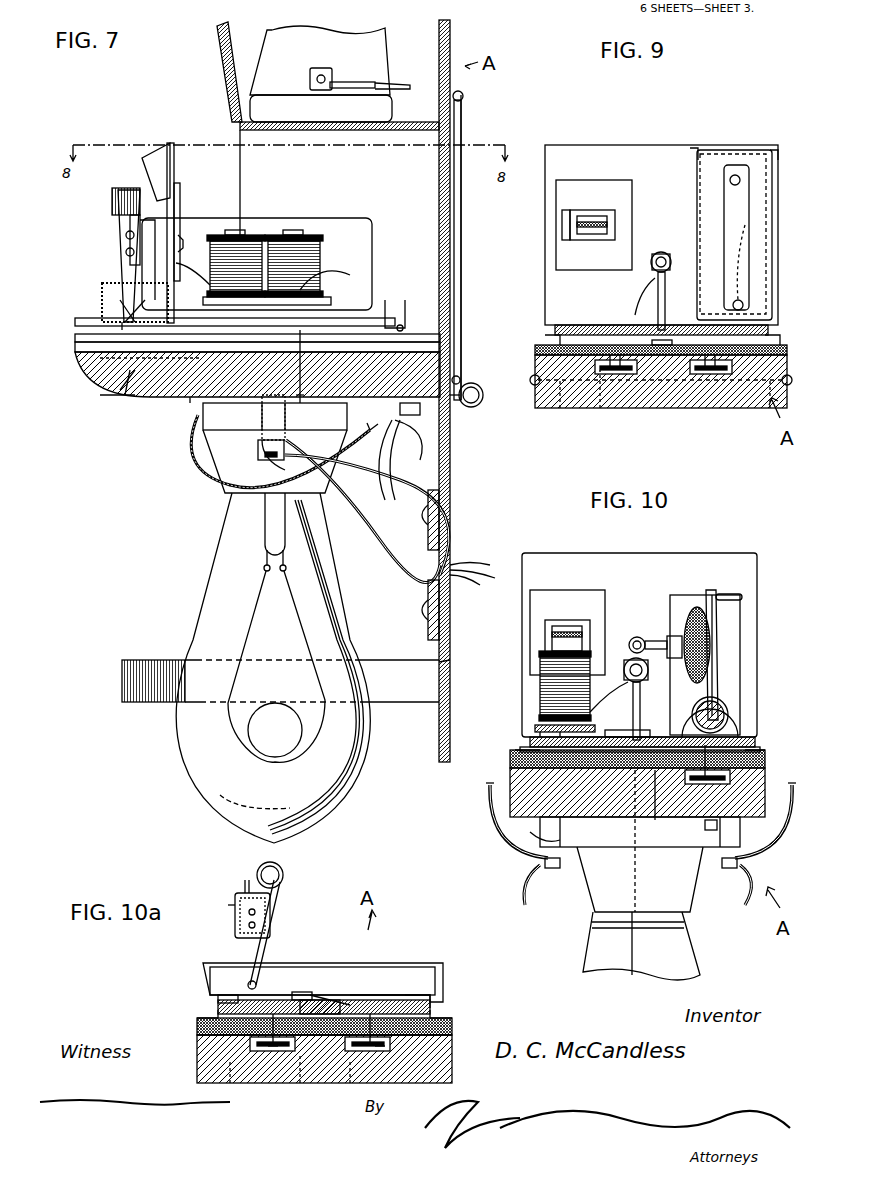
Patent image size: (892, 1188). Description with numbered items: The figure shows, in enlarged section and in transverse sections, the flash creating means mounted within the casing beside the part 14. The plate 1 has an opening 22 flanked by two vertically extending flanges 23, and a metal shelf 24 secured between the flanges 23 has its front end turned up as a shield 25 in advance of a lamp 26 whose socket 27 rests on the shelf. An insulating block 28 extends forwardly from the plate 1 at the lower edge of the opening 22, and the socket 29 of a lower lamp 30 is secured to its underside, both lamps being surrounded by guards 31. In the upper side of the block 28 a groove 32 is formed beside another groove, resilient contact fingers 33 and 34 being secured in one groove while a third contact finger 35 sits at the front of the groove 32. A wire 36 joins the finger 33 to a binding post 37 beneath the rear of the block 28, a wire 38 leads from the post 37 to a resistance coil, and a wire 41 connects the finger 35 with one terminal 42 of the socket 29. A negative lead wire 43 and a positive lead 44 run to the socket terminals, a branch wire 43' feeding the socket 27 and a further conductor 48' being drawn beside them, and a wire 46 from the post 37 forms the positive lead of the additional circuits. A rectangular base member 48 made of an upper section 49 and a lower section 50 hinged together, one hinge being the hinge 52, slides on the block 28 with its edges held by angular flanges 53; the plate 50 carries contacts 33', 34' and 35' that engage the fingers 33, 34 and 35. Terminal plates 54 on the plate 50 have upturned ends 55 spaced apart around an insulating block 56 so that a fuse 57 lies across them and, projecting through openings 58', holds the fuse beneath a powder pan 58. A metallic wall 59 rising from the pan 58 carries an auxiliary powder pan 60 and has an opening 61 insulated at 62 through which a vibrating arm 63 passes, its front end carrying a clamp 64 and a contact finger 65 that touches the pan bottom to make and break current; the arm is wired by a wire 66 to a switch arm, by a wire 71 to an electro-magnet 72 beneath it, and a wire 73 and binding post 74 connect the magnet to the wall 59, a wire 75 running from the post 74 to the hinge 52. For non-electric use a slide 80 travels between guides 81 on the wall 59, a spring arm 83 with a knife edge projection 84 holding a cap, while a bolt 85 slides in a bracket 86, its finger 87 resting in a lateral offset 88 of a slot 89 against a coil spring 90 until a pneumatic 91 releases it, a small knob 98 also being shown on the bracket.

In FIG. 7, the plate 1 is at (450, 645).
In FIG. 7, the casing wall 14 is at (452, 225).
In FIG. 7, the opening 22 is at (461, 186).
In FIG. 7, the vertically extending flanges 23 is at (462, 145).
In FIG. 7, the metal shelf 24 is at (382, 132).
In FIG. 7, the shield 25 is at (228, 60).
In FIG. 7, the lamp 26 is at (380, 40).
In FIG. 9, the lamp 26 is at (575, 395).
In FIG. 7, the socket 27 is at (385, 70).
In FIG. 7, the insulating block 28 is at (198, 430).
In FIG. 10, the insulating block 28 is at (525, 835).
In FIG. 10a, the insulating block 28 is at (245, 1062).
In FIG. 7, the socket 29 is at (232, 480).
In FIG. 10, the socket 29 is at (595, 895).
In FIG. 7, the lower lamp 30 is at (215, 616).
In FIG. 10, the lower lamp 30 is at (690, 960).
In FIG. 7, the guards 31 is at (145, 660).
In FIG. 9, the guards 31 is at (600, 375).
In FIG. 10, the guards 31 is at (700, 785).
In FIG. 10a, the guards 31 is at (310, 1055).
In FIG. 7, the groove 32 is at (100, 390).
In FIG. 9, the groove 32 is at (710, 375).
In FIG. 10a, the groove 32 is at (385, 1048).
In FIG. 9, the contact finger 33 is at (616, 397).
In FIG. 10a, the contact finger 33 is at (265, 1071).
In FIG. 10a, the contact 33' is at (279, 1079).
In FIG. 10, the contact finger 34 is at (657, 824).
In FIG. 7, the contact 34' is at (309, 375).
In FIG. 10, the contact 34' is at (742, 764).
In FIG. 7, the contact finger 35 is at (93, 403).
In FIG. 9, the contact finger 35 is at (750, 407).
In FIG. 10a, the contact finger 35 is at (345, 1096).
In FIG. 7, the contact 35' is at (113, 392).
In FIG. 10a, the contact 35' is at (387, 1074).
In FIG. 7, the wire 36 is at (195, 405).
In FIG. 7, the binding post 37 is at (440, 430).
In FIG. 7, the wire 38 is at (400, 470).
In FIG. 7, the wire 41 is at (262, 414).
In FIG. 7, the terminal 42 is at (251, 457).
In FIG. 10, the terminal 42 is at (560, 870).
In FIG. 7, the negative lead wire 43 is at (390, 520).
In FIG. 10, the negative lead wire 43 is at (513, 835).
In FIG. 7, the branch wire 43' is at (237, 483).
In FIG. 7, the positive lead 44 is at (375, 518).
In FIG. 10, the positive lead 44 is at (765, 848).
In FIG. 7, the wire 46 is at (450, 500).
In FIG. 10, the wire 46 is at (750, 748).
In FIG. 7, the base member 48 is at (242, 343).
In FIG. 9, the base member 48 is at (646, 317).
In FIG. 10a, the base member 48 is at (345, 1035).
In FIG. 10, the conductor 48' is at (762, 881).
In FIG. 7, the upper section 49 is at (80, 318).
In FIG. 9, the upper section 49 is at (575, 325).
In FIG. 10, the upper section 49 is at (745, 737).
In FIG. 10a, the upper section 49 is at (218, 1005).
In FIG. 7, the lower section 50 is at (78, 362).
In FIG. 9, the lower section 50 is at (535, 352).
In FIG. 10, the lower section 50 is at (510, 760).
In FIG. 10a, the lower section 50 is at (197, 1040).
In FIG. 7, the hinge 52 is at (395, 328).
In FIG. 9, the angular flanges 53 is at (548, 340).
In FIG. 10, the angular flanges 53 is at (515, 752).
In FIG. 10a, the angular flanges 53 is at (197, 1020).
In FIG. 7, the terminal plates 54 is at (120, 315).
In FIG. 9, the terminal plates 54 is at (775, 318).
In FIG. 10, the terminal plates 54 is at (540, 738).
In FIG. 10a, the terminal plates 54 is at (235, 1000).
In FIG. 7, the upturned ends 55 is at (128, 322).
In FIG. 10a, the upturned ends 55 is at (320, 995).
In FIG. 9, the insulating block 56 is at (670, 345).
In FIG. 10, the insulating block 56 is at (640, 800).
In FIG. 10a, the insulating block 56 is at (320, 1000).
In FIG. 10a, the fuse 57 is at (300, 990).
In FIG. 7, the pan 58 is at (125, 288).
In FIG. 10a, the pan 58 is at (335, 968).
In FIG. 10a, the openings 58' is at (385, 965).
In FIG. 7, the metallic wall 59 is at (175, 172).
In FIG. 9, the metallic wall 59 is at (652, 145).
In FIG. 10, the metallic wall 59 is at (612, 565).
In FIG. 7, the auxiliary powder pan 60 is at (160, 157).
In FIG. 9, the opening 61 is at (615, 222).
In FIG. 7, the insulation 62 is at (182, 205).
In FIG. 9, the insulation 62 is at (610, 190).
In FIG. 10, the insulation 62 is at (580, 610).
In FIG. 7, the vibrating arm 63 is at (275, 218).
In FIG. 9, the vibrating arm 63 is at (592, 215).
In FIG. 10, the vibrating arm 63 is at (565, 625).
In FIG. 10a, the vibrating arm 63 is at (245, 882).
In FIG. 7, the clamp 64 is at (122, 213).
In FIG. 10a, the clamp 64 is at (233, 895).
In FIG. 7, the contact finger 65 is at (122, 238).
In FIG. 10a, the contact finger 65 is at (280, 905).
In FIG. 10, the wire 66 is at (690, 659).
In FIG. 7, the wire 71 is at (350, 285).
In FIG. 7, the electro-magnet 72 is at (322, 265).
In FIG. 10, the electro-magnet 72 is at (540, 681).
In FIG. 7, the wire 73 is at (198, 270).
In FIG. 10, the wire 73 is at (618, 668).
In FIG. 7, the binding post 74 is at (183, 245).
In FIG. 10, the binding post 74 is at (620, 682).
In FIG. 10, the wire 75 is at (633, 718).
In FIG. 9, the slide 80 is at (735, 150).
In FIG. 9, the guides 81 is at (693, 148).
In FIG. 9, the spring arm 83 is at (750, 215).
In FIG. 9, the knife edge projection 84 is at (745, 250).
In FIG. 10, the bolt 85 is at (735, 700).
In FIG. 10, the bracket 86 is at (665, 612).
In FIG. 10, the finger 87 is at (712, 622).
In FIG. 10, the lateral offset 88 is at (718, 590).
In FIG. 10, the slot 89 is at (735, 594).
In FIG. 10, the coil spring 90 is at (716, 705).
In FIG. 10, the pneumatic 91 is at (712, 590).
In FIG. 10, the knob 98 is at (638, 637).